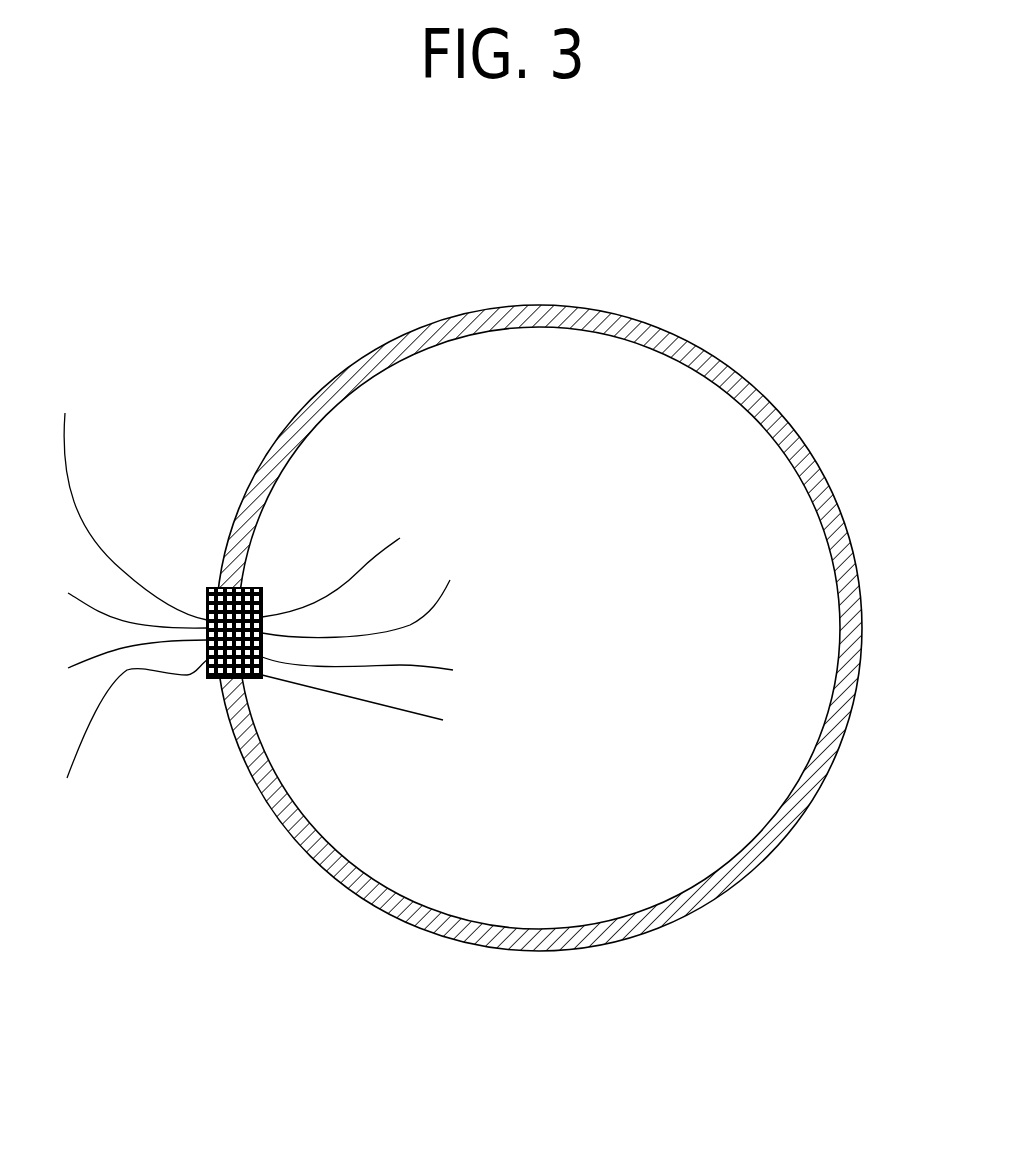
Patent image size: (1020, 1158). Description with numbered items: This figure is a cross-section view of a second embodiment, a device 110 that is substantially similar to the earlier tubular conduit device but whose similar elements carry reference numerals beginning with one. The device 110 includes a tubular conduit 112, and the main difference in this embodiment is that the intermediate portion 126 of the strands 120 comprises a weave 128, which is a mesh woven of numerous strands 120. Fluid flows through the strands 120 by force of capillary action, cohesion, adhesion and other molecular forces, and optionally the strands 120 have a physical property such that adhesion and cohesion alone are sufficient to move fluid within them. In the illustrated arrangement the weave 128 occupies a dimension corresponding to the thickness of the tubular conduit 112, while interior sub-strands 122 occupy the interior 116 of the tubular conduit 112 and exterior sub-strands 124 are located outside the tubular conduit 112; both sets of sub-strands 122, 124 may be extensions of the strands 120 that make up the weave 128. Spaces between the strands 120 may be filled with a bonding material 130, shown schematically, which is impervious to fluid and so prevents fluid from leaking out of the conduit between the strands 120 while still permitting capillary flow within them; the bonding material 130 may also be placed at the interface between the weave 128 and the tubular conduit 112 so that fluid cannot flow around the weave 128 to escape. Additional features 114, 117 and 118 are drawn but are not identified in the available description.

The device 110 is at (539, 563).
The tubular conduit 112 is at (478, 345).
The outer surface 114 is at (322, 383).
The interior 116 is at (793, 755).
The fiber ends 117 is at (262, 582).
The fiber port 118 is at (265, 692).
The strands 120 is at (145, 584).
The interior sub-strands 122 is at (493, 595).
The exterior sub-strands 124 is at (98, 516).
The intermediate portion 126 is at (227, 728).
The weave 128 is at (202, 519).
The bonding material 130 is at (227, 588).